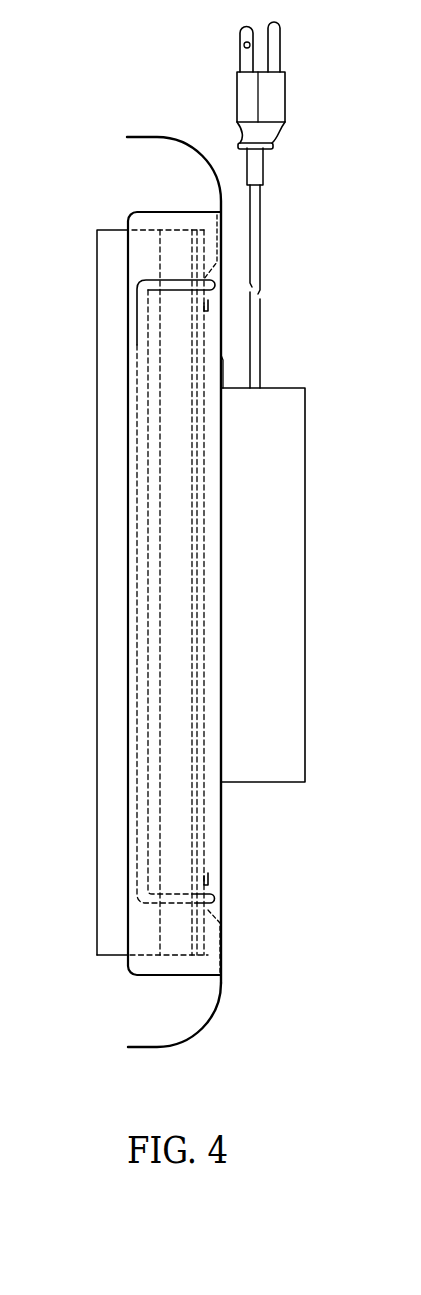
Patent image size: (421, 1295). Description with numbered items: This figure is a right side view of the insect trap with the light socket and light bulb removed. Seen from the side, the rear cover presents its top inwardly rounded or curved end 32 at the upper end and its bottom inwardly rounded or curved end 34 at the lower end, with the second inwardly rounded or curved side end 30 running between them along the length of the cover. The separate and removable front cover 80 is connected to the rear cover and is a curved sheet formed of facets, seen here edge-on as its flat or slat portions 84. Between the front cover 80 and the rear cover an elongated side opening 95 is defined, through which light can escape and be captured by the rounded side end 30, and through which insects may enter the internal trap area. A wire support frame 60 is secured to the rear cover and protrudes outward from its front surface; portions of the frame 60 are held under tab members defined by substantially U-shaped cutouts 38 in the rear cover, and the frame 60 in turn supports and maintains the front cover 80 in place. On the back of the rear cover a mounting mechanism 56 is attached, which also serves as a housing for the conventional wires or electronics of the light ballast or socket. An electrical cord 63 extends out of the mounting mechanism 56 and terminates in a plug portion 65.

The second inwardly rounded or curved side end 30 is at (162, 212).
The top inwardly rounded or curved end 32 is at (160, 137).
The bottom inwardly rounded or curved end 34 is at (183, 1035).
The cutouts 38 is at (207, 311).
The mounting mechanism 56 is at (275, 765).
The wire support frame 60 is at (143, 284).
The electrical cord 63 is at (262, 240).
The plug portion 65 is at (286, 96).
The front cover 80 is at (96, 873).
The flat or slat portions 84 is at (148, 960).
The elongated side openings 95 is at (210, 568).